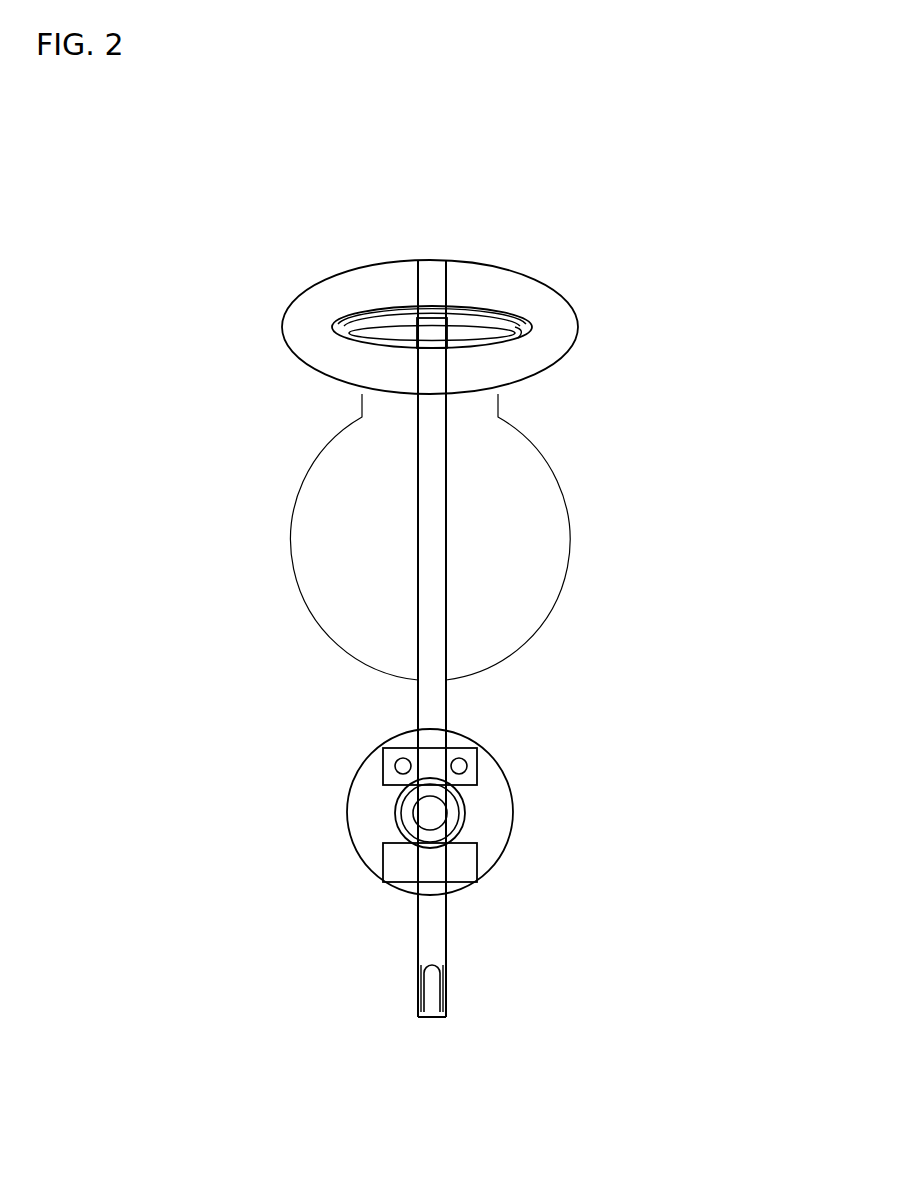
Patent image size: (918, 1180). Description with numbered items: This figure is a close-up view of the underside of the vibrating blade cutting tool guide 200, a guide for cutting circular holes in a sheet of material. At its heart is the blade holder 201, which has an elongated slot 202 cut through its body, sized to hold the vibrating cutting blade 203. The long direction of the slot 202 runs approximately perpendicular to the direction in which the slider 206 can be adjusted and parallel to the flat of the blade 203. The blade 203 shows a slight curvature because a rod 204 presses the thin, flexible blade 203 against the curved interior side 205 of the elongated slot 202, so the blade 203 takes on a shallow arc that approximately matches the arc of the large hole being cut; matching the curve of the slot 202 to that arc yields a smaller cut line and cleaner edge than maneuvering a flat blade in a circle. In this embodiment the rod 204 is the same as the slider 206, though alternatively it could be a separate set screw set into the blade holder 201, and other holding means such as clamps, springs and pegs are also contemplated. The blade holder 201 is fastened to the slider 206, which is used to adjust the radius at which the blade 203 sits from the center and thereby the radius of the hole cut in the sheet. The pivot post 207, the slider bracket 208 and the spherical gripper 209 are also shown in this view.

The vibrating blade cutting tool guide 200 is at (645, 216).
The blade holder 201 is at (320, 297).
The elongated slot 202 is at (336, 330).
The vibrating cutting blade 203 is at (486, 327).
The rod 204 is at (436, 333).
The curved interior side 205 is at (465, 310).
The slider 206 is at (410, 515).
The pivot post 207 is at (465, 812).
The slider bracket 208 is at (478, 757).
The spherical gripper 209 is at (510, 843).